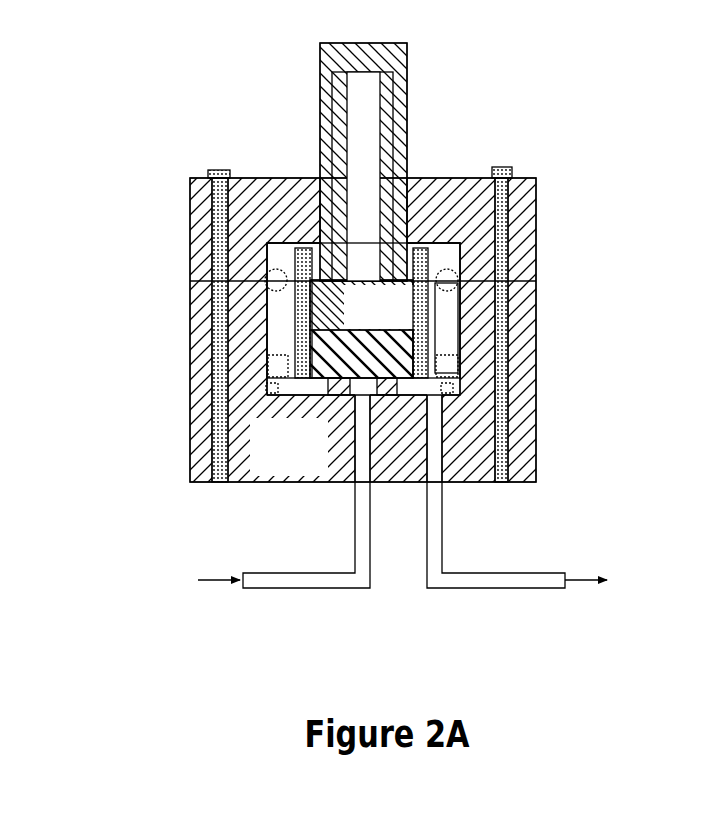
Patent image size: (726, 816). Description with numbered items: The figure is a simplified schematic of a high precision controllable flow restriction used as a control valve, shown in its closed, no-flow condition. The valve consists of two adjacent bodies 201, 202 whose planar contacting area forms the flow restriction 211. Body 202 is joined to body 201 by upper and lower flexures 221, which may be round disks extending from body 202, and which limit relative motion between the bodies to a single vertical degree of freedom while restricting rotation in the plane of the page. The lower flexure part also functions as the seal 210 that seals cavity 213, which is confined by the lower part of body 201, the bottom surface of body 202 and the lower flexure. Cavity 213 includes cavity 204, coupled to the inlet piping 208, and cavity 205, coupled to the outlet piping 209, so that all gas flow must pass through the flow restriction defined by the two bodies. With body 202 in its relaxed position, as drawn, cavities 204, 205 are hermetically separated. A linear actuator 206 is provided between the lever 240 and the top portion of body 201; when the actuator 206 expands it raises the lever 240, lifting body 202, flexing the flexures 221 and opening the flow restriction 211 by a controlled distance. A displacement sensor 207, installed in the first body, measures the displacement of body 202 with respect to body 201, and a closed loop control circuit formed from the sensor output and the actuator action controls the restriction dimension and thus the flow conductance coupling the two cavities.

The body 201 is at (363, 324).
The body 202 is at (363, 329).
The cavity 204 is at (368, 391).
The cavity 205 is at (457, 389).
The linear actuator 206 is at (345, 152).
The displacement sensor 207 is at (343, 256).
The inlet piping 208 is at (310, 595).
The outlet piping 209 is at (502, 595).
The seal 210 is at (228, 393).
The flow restriction 211 is at (340, 390).
The cavity 213 is at (303, 383).
The flexures 221 is at (262, 386).
The lever 240 is at (407, 68).